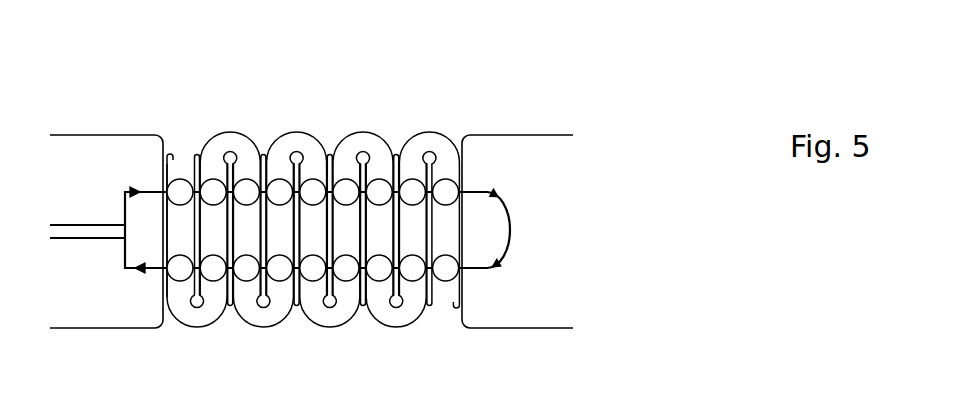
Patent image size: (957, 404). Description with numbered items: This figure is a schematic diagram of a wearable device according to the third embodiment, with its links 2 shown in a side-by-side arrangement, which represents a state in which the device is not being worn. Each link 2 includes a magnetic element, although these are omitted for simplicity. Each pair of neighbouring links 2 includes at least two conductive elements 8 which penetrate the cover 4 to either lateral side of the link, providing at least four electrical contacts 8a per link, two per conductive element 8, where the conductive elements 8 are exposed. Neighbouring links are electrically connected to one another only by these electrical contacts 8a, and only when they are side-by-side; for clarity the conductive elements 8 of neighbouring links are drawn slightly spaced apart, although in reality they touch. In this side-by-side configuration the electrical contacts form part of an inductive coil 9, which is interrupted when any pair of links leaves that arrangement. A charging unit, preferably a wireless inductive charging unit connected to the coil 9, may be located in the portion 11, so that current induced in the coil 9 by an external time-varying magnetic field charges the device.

The link 2 is at (306, 203).
The cover 4 is at (442, 136).
The conductive element 8 is at (208, 190).
The electrical contact 8a is at (364, 190).
The inductive coil 9 is at (151, 192).
The portion 11 is at (517, 310).